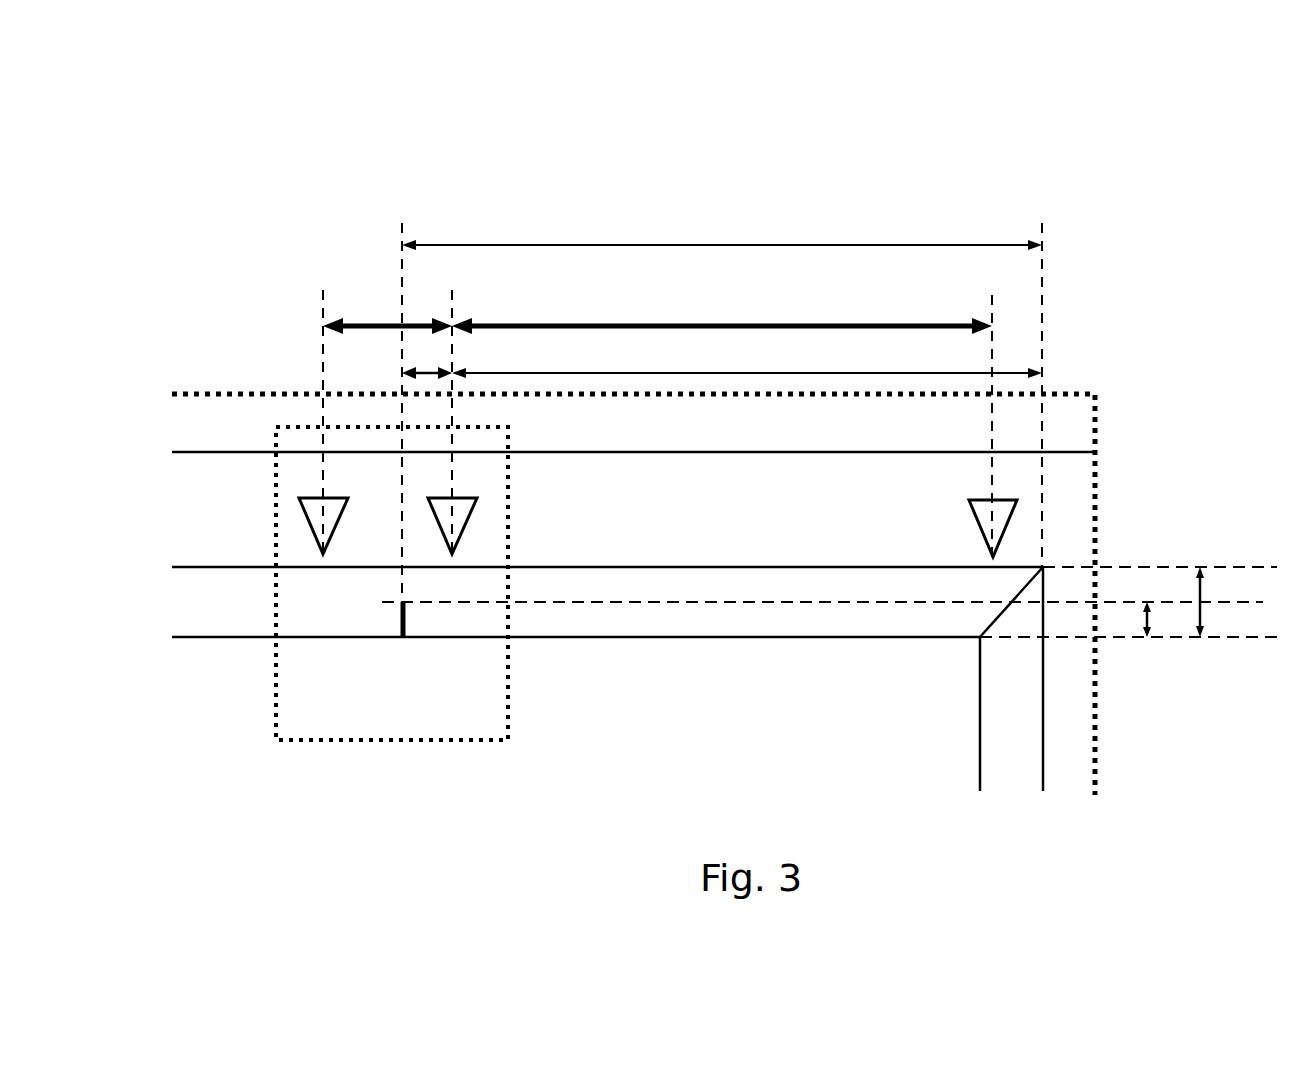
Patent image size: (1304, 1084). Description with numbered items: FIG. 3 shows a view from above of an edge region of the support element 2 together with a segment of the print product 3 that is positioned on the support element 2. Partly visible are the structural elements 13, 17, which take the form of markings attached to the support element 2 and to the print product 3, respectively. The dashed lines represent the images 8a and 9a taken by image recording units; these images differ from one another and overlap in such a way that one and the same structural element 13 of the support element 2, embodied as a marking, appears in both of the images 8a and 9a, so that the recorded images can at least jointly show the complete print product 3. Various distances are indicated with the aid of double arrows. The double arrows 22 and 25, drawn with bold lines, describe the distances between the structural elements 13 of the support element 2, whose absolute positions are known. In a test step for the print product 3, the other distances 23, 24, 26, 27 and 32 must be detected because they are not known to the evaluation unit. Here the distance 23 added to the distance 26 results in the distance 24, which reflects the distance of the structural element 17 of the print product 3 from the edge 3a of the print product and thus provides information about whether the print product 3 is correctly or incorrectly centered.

The support element 2 is at (765, 472).
The print product 3 is at (718, 598).
The edge of the print product 3a is at (1044, 688).
The image 8a is at (318, 427).
The image 9a is at (257, 393).
The structural element 13 is at (327, 520).
The structural element 17 is at (403, 613).
The double arrow 22 is at (366, 322).
The distance 23 is at (417, 367).
The distance 24 is at (583, 244).
The double arrow 25 is at (790, 323).
The distance 26 is at (957, 375).
The distance 27 is at (1147, 617).
The distance 32 is at (1200, 577).